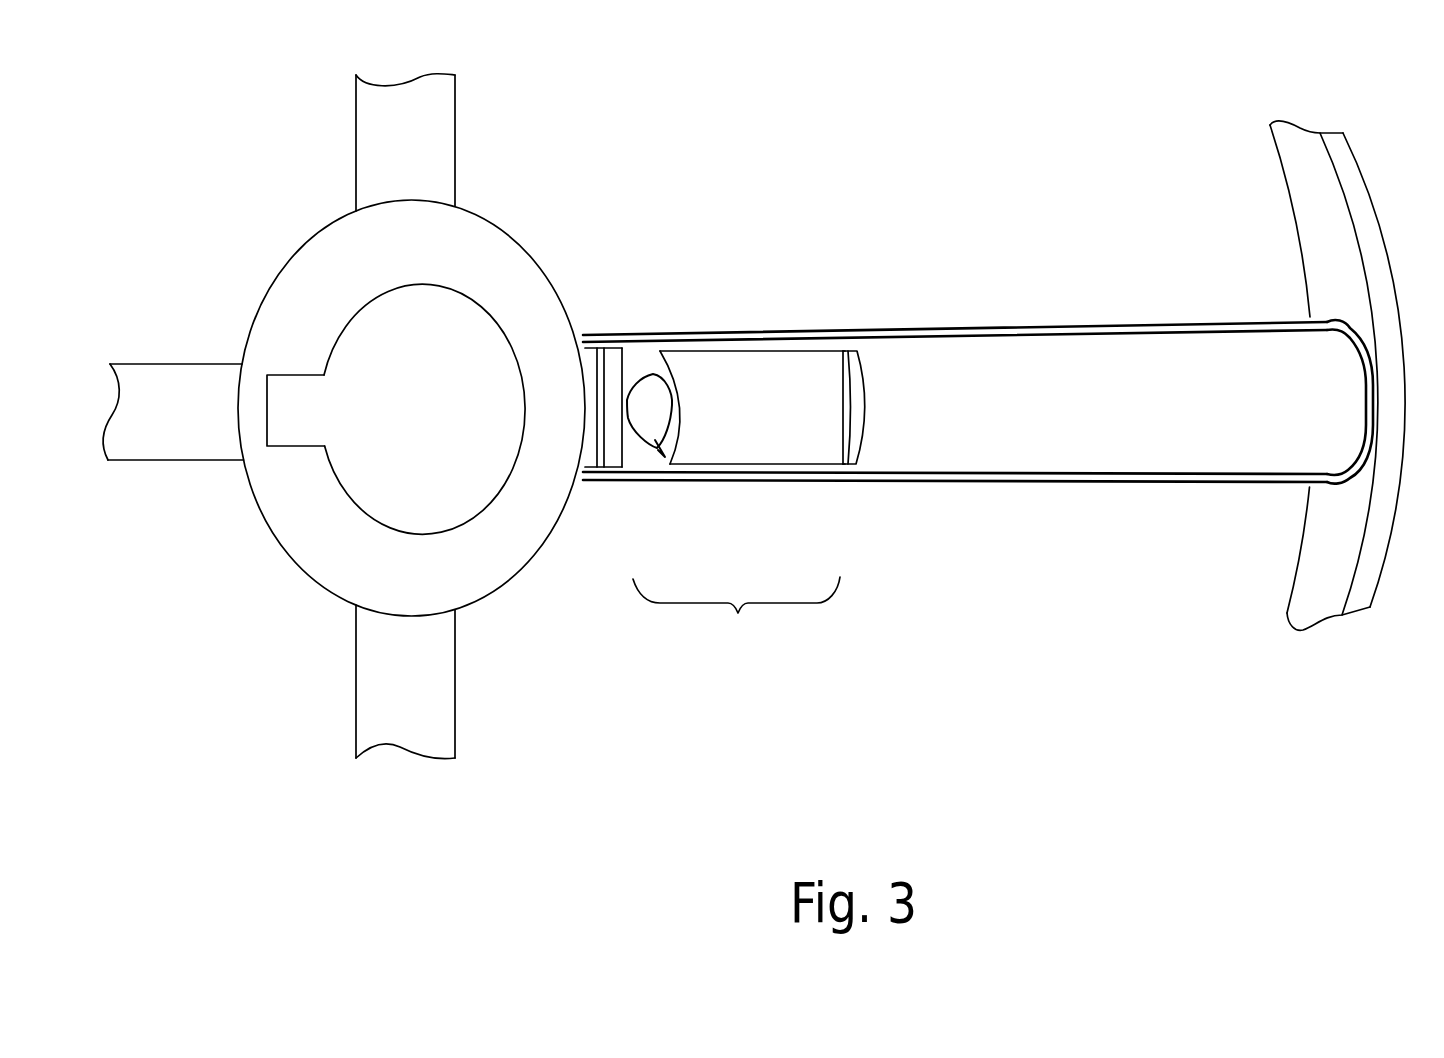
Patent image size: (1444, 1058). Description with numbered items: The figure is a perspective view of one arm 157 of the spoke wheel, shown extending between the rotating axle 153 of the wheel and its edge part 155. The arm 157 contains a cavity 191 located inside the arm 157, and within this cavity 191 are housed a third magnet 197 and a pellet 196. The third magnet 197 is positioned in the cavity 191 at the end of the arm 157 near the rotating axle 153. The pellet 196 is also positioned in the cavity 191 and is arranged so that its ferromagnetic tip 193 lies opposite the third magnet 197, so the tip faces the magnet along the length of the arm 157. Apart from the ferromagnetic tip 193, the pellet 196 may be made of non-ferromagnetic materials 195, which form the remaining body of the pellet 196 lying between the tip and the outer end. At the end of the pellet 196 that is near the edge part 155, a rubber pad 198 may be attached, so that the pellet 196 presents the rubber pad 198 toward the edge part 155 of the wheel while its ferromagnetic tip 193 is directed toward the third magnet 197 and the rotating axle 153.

The rotating axle 153 is at (467, 468).
The edge part 155 is at (1350, 215).
The arm 157 is at (961, 327).
The cavity 191 is at (1078, 377).
The ferromagnetic tip 193 is at (648, 428).
The non-ferromagnetic materials 195 is at (795, 423).
The pellet 196 is at (736, 617).
The third magnet 197 is at (613, 370).
The rubber pad 198 is at (858, 413).